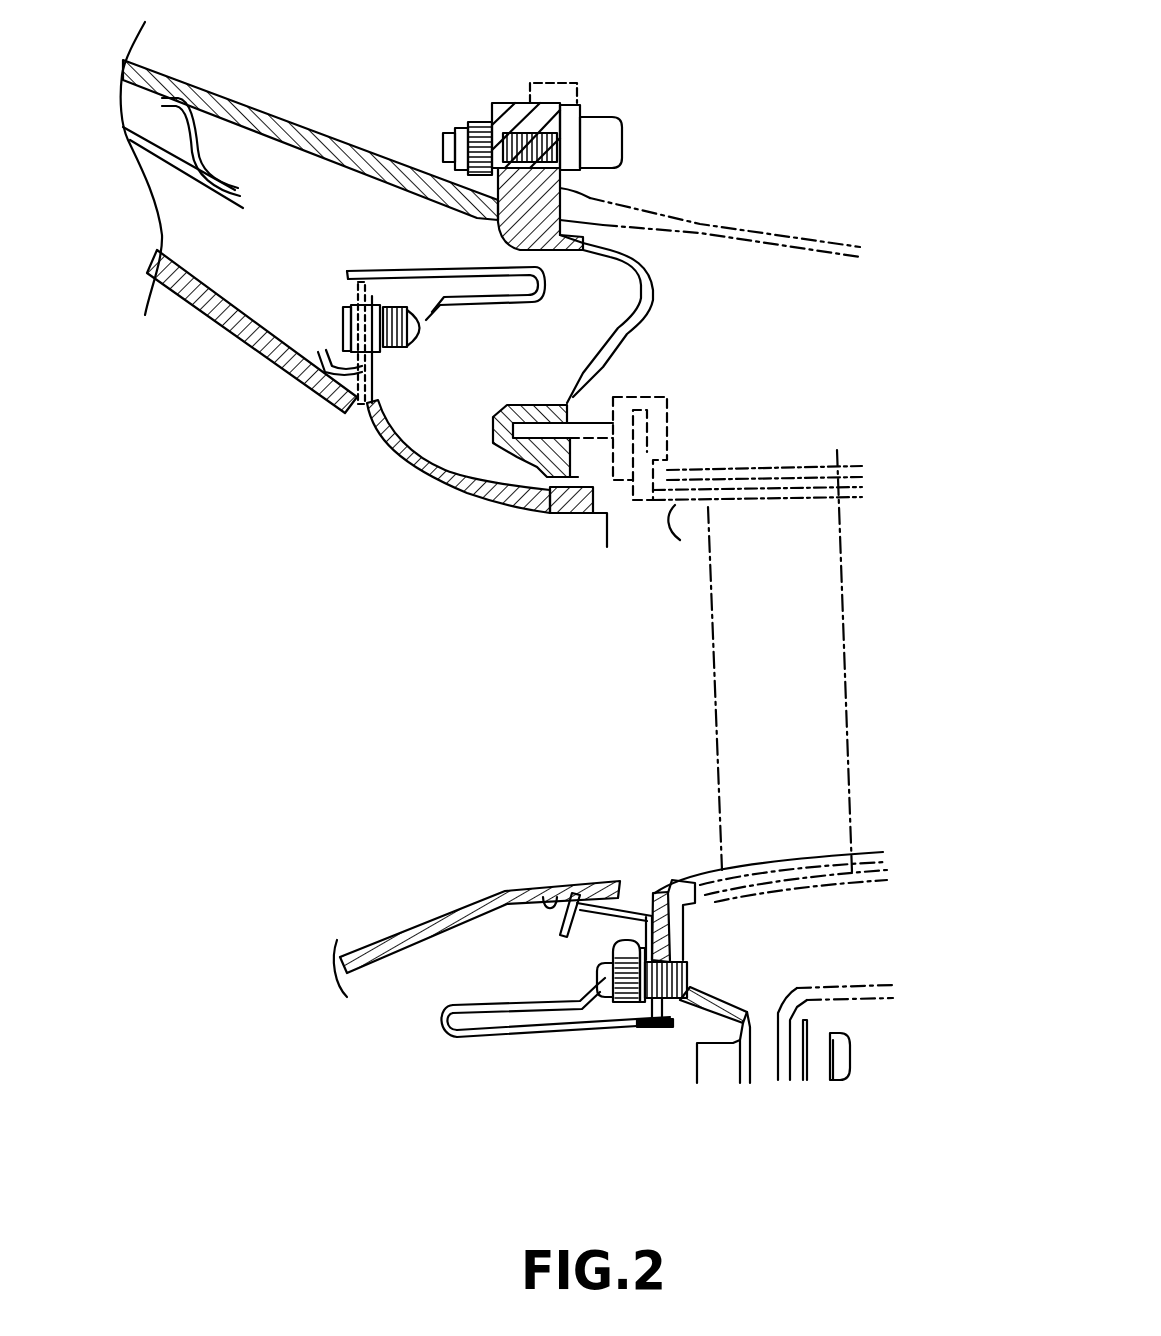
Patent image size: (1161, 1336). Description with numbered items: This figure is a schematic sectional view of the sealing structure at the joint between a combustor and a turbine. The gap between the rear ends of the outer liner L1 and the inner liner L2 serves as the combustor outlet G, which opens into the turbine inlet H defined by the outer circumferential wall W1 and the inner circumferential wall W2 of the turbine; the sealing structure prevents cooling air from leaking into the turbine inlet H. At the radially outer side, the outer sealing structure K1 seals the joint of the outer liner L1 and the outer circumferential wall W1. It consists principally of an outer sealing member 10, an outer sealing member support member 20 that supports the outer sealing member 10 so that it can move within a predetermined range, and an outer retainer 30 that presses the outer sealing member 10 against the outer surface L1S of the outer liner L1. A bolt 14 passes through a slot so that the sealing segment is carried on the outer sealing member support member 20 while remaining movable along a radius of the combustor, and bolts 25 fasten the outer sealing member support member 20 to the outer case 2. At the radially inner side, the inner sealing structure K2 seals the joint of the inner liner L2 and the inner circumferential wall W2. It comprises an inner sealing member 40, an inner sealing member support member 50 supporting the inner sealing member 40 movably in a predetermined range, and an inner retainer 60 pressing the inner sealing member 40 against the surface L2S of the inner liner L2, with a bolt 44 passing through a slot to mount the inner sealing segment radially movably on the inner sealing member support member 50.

The outer case 2 is at (363, 143).
The bolts 25 is at (537, 120).
The outer sealing member support member 20 is at (663, 259).
The outer sealing structure K1 is at (336, 208).
The outer liner L1 is at (222, 287).
The outer surface of the outer liner L1S is at (280, 305).
The bolt 14 is at (423, 317).
The outer sealing member 10 is at (363, 403).
The outer retainer 30 is at (513, 307).
The outer circumferential wall W1 is at (673, 507).
The combustor outlet G is at (380, 692).
The turbine inlet H is at (805, 740).
The inner circumferential wall W2 is at (693, 867).
The inner liner L2 is at (490, 885).
The surface of the inner liner L2S is at (557, 883).
The inner sealing member 40 is at (563, 930).
The bolt 44 is at (593, 977).
The inner sealing member support member 50 is at (720, 995).
The inner retainer 60 is at (527, 1037).
The inner sealing structure K2 is at (734, 936).